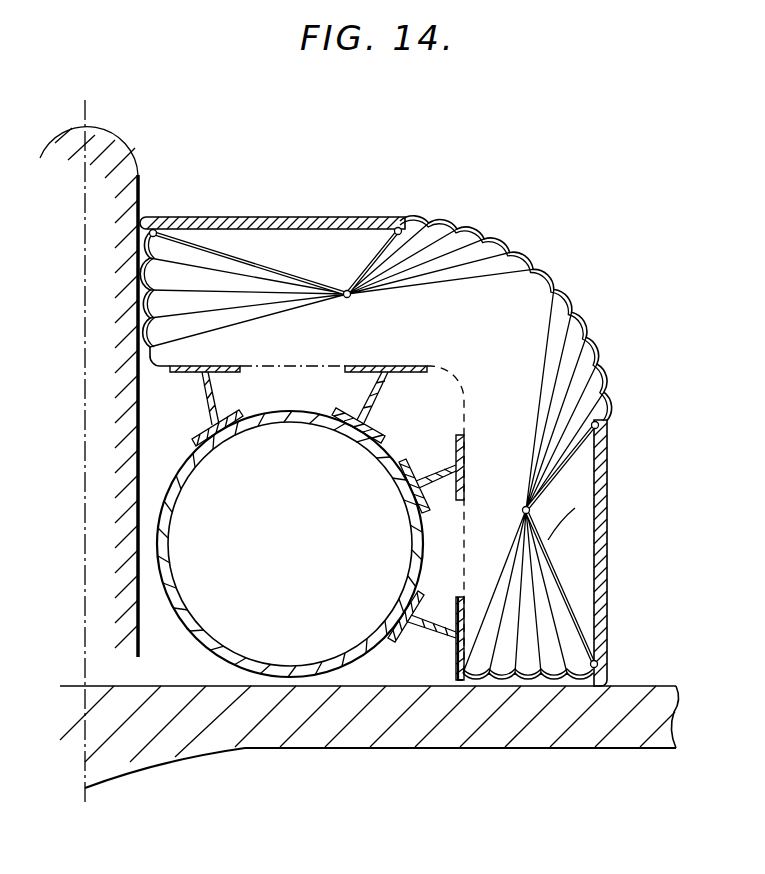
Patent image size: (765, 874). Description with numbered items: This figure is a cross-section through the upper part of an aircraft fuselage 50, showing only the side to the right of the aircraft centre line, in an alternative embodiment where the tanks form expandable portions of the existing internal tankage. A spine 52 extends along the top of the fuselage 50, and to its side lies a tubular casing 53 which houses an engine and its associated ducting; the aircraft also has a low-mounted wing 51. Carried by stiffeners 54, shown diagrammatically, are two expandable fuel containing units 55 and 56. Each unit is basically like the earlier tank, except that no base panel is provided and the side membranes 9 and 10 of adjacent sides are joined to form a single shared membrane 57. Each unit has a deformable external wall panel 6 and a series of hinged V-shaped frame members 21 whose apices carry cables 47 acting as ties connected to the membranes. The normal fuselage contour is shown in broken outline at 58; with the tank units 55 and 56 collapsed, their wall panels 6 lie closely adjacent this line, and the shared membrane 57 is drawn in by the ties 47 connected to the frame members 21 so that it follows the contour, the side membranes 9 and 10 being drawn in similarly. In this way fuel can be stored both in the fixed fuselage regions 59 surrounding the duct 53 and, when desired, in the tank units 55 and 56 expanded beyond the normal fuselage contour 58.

The deformable external wall panel 6 is at (184, 222).
The side membrane 9 is at (138, 236).
The side membrane 10 is at (533, 688).
The V-shaped frame member 21 is at (380, 240).
The cable 47 is at (158, 282).
The fuselage 50 is at (85, 543).
The low-mounted wing 51 is at (632, 692).
The spine 52 is at (107, 143).
The tubular casing 53 is at (288, 675).
The stiffener 54 is at (215, 396).
The expandable fuel containing unit 55 is at (236, 240).
The expandable fuel containing unit 56 is at (575, 508).
The shared membrane 57 is at (541, 281).
The fuselage contour 58 is at (478, 405).
The fixed fuselage region 59 is at (165, 405).